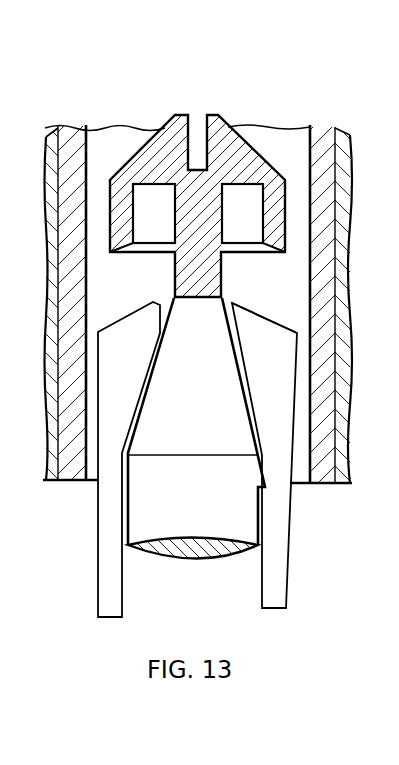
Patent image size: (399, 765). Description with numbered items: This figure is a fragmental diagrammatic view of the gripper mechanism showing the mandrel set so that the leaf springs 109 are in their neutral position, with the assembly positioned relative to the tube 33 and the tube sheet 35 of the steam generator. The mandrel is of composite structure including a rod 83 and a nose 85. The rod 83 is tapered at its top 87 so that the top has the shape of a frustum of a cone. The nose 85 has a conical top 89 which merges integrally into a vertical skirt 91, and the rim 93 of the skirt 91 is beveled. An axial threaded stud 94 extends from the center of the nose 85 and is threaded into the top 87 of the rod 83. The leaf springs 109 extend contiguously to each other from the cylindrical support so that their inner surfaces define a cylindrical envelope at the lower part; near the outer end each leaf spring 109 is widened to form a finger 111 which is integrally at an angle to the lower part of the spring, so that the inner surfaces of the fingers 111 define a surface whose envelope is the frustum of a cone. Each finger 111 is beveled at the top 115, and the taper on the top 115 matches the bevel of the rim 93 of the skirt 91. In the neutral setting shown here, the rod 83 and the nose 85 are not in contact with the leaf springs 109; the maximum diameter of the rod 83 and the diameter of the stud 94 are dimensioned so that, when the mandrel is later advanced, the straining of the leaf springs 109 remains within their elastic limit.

The tube 33 is at (313, 132).
The tube sheet 35 is at (345, 140).
The rod 83 is at (163, 550).
The nose 85 is at (196, 105).
The top of rod 87 is at (227, 383).
The conical top 89 is at (150, 147).
The skirt 91 is at (128, 210).
The rim 93 is at (120, 250).
The threaded stud 94 is at (213, 273).
The leaf springs 109 is at (280, 560).
The finger 111 is at (255, 317).
The top of finger 115 is at (112, 321).